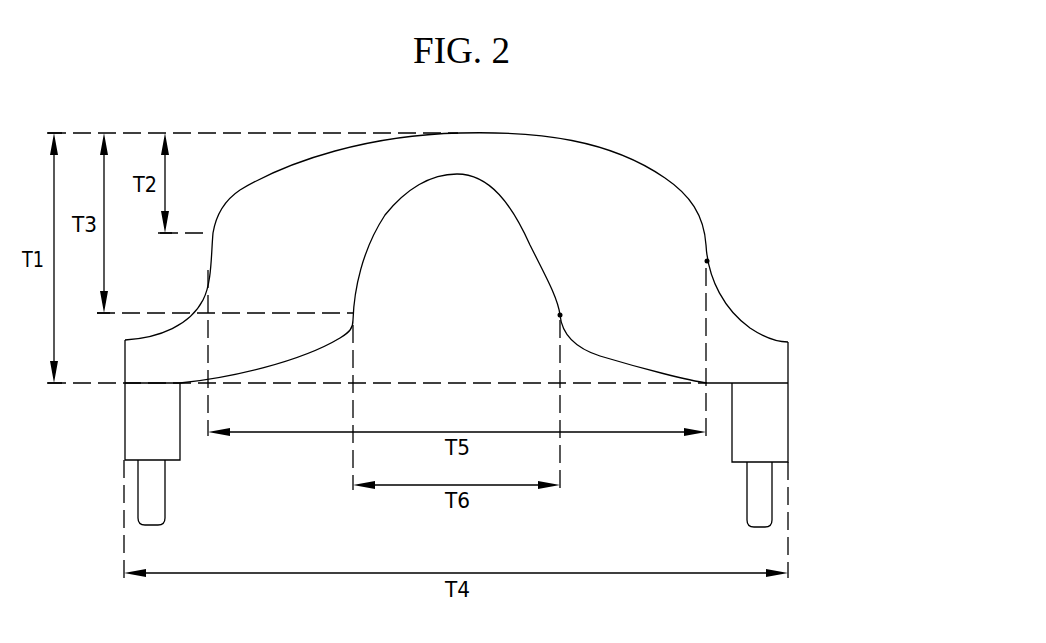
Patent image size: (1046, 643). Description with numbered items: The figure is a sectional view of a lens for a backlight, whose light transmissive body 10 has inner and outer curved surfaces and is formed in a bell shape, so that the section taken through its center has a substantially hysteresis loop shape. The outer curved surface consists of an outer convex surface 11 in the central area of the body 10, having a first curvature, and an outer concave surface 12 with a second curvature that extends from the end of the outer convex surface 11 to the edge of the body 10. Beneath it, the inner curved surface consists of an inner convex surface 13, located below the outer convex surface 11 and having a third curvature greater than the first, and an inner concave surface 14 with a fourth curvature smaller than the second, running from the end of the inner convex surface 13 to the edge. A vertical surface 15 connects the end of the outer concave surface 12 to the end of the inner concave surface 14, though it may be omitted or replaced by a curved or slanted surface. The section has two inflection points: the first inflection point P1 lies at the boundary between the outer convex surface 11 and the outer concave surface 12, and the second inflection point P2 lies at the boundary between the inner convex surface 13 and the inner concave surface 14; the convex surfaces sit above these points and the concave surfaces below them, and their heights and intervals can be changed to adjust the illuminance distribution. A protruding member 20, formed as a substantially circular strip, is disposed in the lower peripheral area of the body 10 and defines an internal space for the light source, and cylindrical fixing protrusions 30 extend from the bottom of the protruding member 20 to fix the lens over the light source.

The light transmissive body 10 is at (871, 373).
The outer convex surface 11 is at (587, 150).
The outer concave surface 12 is at (717, 297).
The inner convex surface 13 is at (527, 203).
The inner concave surface 14 is at (633, 367).
The vertical surface 15 is at (788, 367).
The protruding member 20 is at (767, 431).
The fixing protrusions 30 is at (767, 496).
The first inflection point P1 is at (707, 260).
The second inflection point P2 is at (560, 317).